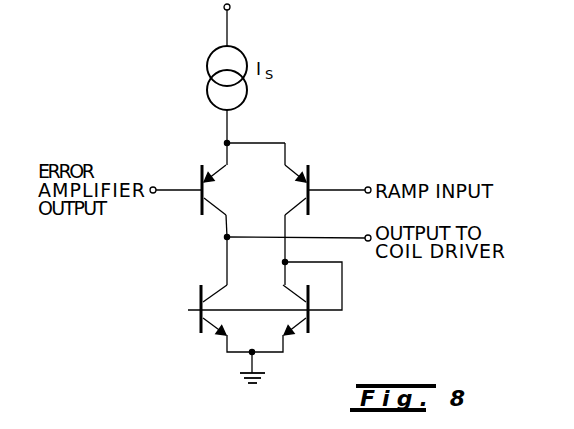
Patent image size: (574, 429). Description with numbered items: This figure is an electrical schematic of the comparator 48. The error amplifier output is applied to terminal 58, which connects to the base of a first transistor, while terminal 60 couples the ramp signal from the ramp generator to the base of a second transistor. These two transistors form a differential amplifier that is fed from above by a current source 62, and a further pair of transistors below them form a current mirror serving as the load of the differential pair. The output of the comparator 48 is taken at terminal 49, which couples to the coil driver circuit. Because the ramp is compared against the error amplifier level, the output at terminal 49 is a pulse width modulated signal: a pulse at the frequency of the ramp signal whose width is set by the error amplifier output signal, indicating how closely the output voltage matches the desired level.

The comparator 48 is at (334, 46).
The terminal 49 is at (367, 242).
The terminal 58 is at (153, 187).
The terminal 60 is at (366, 187).
The current source 62 is at (243, 54).